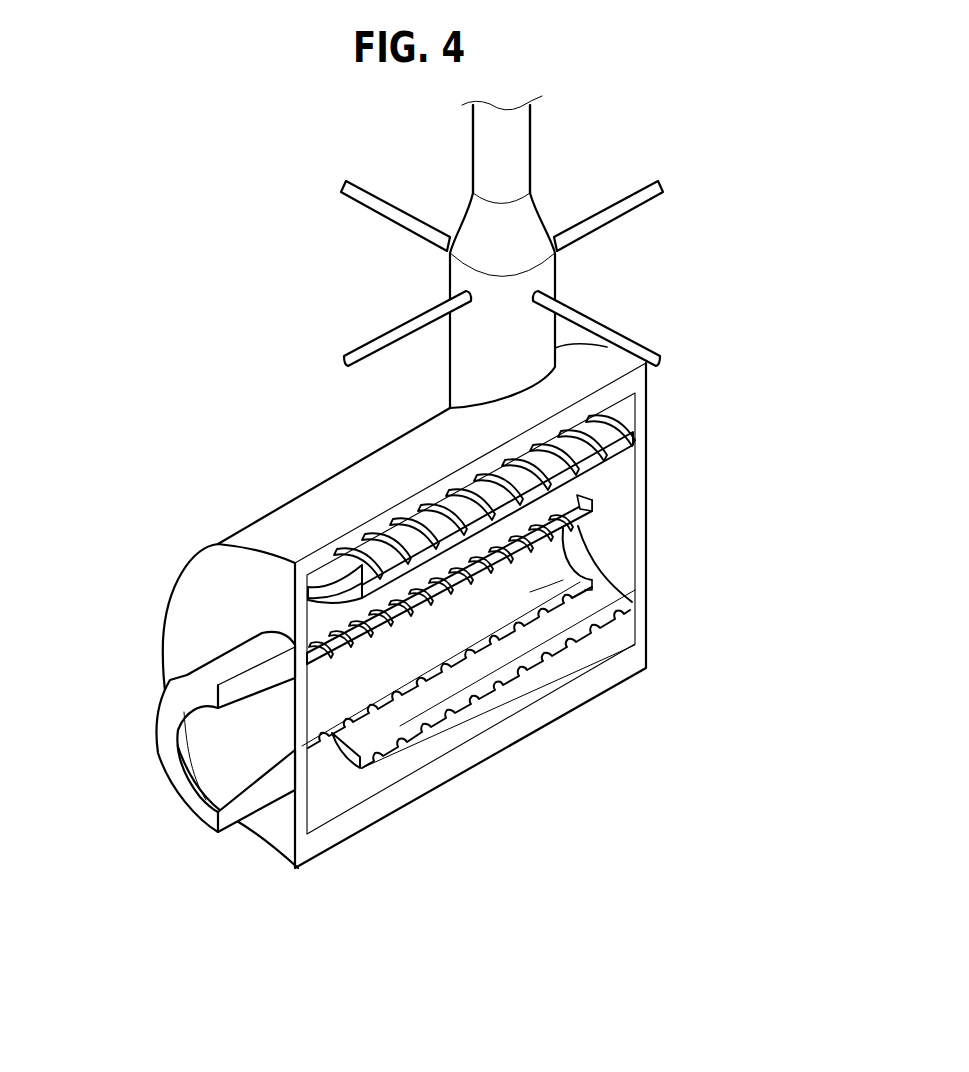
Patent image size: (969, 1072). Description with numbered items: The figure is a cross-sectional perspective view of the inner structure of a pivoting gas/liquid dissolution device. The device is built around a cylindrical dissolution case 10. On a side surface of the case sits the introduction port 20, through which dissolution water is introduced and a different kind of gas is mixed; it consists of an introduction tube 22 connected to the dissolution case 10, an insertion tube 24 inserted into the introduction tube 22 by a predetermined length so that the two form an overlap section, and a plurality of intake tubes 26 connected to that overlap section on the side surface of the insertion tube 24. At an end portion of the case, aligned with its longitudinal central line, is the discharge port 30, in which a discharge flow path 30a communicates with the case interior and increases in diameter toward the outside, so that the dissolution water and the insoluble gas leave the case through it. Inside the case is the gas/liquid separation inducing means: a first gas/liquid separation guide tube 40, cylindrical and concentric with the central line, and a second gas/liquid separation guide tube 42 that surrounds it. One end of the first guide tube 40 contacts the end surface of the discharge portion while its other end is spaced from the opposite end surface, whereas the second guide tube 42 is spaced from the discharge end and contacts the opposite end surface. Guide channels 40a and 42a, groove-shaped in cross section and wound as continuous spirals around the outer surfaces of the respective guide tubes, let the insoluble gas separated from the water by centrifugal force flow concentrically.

The dissolution case 10 is at (410, 694).
The introduction port 20 is at (516, 245).
The introduction tube 22 is at (547, 280).
The insertion tube 24 is at (520, 152).
The intake tubes 26 is at (375, 335).
The discharge port 30 is at (255, 815).
The discharge flow path 30a is at (190, 812).
The first gas/liquid separation guide tube 40 is at (523, 579).
The guide channel 40a is at (562, 535).
The second gas/liquid separation guide tube 42 is at (535, 509).
The guide channel 42a is at (588, 427).